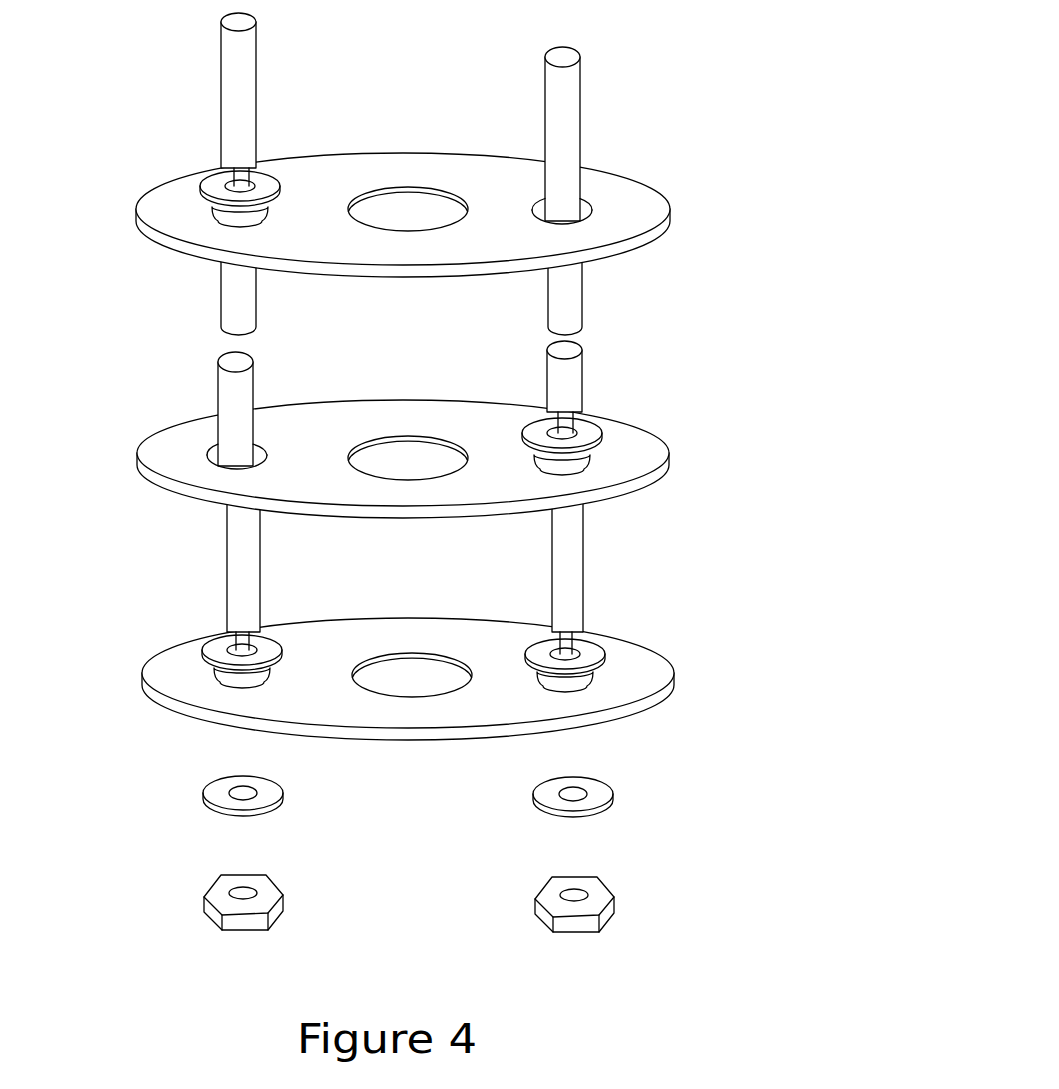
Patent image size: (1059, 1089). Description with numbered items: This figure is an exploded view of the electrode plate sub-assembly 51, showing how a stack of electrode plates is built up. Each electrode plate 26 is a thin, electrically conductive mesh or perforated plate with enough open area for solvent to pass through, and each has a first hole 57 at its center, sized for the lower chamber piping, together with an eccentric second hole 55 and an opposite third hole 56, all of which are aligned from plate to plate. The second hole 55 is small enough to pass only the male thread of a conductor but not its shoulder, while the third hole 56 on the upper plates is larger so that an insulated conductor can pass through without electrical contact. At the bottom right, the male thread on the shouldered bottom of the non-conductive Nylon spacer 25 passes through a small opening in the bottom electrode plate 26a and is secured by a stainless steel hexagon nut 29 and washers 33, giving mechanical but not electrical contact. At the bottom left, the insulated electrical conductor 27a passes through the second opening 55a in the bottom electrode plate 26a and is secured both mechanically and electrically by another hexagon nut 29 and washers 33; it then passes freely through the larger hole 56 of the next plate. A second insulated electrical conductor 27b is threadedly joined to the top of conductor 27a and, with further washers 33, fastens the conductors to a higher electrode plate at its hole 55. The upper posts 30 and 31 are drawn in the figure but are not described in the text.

The Nylon spacer 25 is at (580, 569).
The electrode plate 26 is at (637, 447).
The bottom electrode plate 26a is at (500, 690).
The insulated electrical conductor 27a is at (238, 570).
The insulated electrical conductor 27b is at (570, 385).
The hexagon nut 29 is at (205, 890).
The upright post 30 is at (573, 113).
The upright post 31 is at (240, 108).
The washer 33 is at (212, 183).
The electrode plate sub-assembly 51 is at (806, 369).
The second hole 55 is at (238, 220).
The second opening 55a is at (218, 686).
The third hole 56 is at (588, 198).
The first hole 57 is at (378, 210).